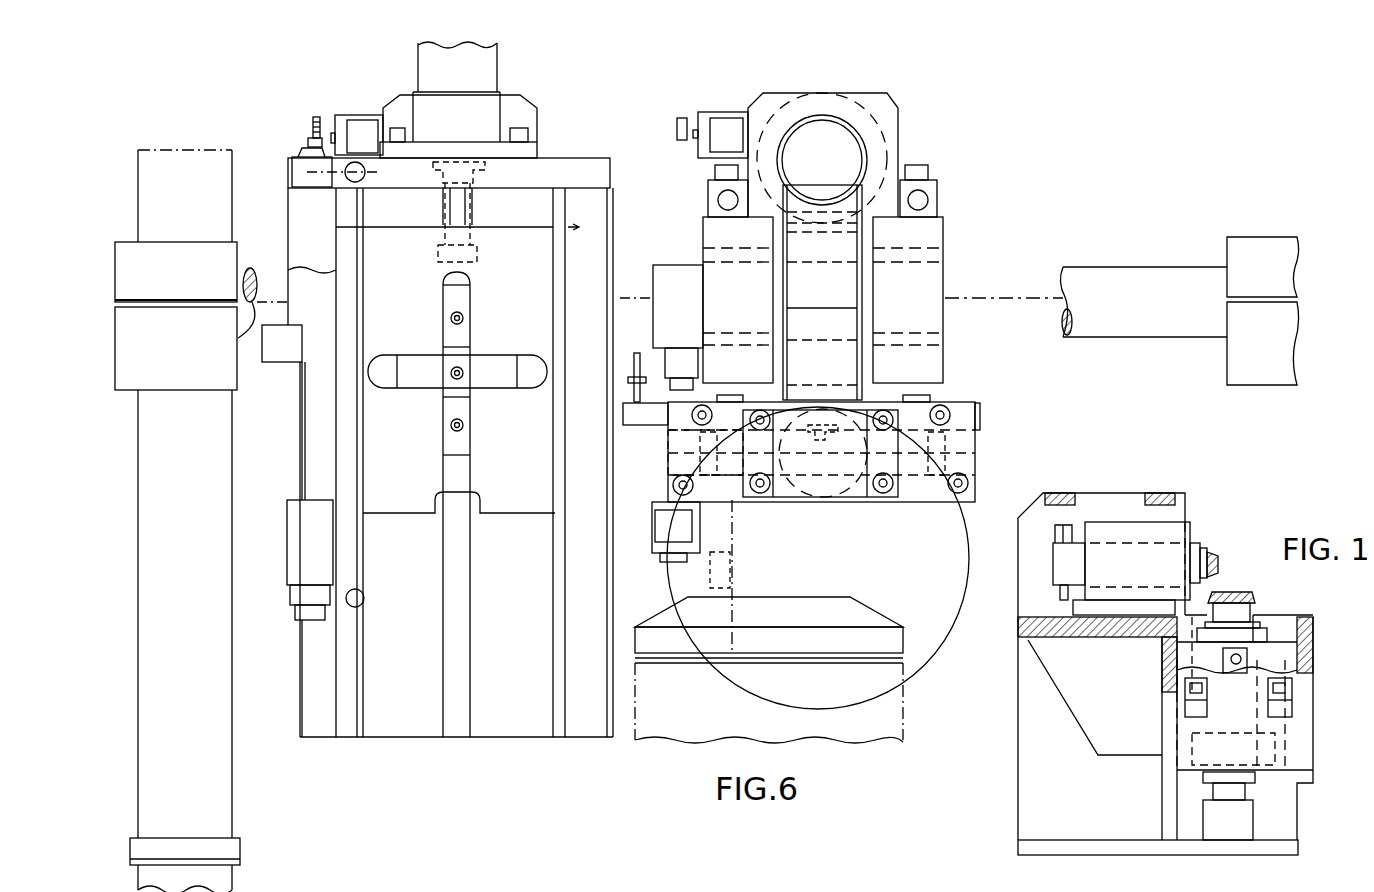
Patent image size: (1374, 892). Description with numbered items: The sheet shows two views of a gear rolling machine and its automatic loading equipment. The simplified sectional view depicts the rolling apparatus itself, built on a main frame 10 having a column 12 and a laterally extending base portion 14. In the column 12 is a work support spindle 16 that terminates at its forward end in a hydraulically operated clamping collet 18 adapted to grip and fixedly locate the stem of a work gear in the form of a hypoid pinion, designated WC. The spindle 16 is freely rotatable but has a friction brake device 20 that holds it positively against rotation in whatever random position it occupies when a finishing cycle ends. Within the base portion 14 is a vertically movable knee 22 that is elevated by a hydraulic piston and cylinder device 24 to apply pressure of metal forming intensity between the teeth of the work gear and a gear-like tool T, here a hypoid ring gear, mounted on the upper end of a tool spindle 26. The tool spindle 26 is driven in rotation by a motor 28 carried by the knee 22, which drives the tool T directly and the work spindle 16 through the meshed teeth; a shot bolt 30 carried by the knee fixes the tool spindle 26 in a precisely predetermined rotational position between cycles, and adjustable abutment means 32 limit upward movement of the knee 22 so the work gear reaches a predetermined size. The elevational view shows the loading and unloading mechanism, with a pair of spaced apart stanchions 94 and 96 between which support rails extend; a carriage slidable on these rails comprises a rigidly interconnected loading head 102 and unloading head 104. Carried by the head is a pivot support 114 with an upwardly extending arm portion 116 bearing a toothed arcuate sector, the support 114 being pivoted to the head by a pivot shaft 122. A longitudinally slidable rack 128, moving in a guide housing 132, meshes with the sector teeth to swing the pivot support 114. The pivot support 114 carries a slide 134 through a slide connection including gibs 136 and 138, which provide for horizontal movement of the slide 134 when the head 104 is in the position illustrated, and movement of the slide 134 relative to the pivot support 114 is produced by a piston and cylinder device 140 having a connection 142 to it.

In FIG. 6, the stanchion 94 is at (148, 543).
In FIG. 6, the stanchion 96 is at (1232, 370).
In FIG. 6, the loading head 102 is at (598, 210).
In FIG. 6, the unloading head 104 is at (945, 217).
In FIG. 6, the pivot support 114 is at (977, 403).
In FIG. 6, the arm portion 116 is at (845, 290).
In FIG. 6, the pivot shaft 122 is at (930, 257).
In FIG. 6, the rack 128 is at (842, 152).
In FIG. 6, the guide housing 132 is at (538, 112).
In FIG. 6, the slide 134 is at (545, 513).
In FIG. 6, the gib 136 is at (668, 455).
In FIG. 6, the gib 138 is at (977, 448).
In FIG. 6, the piston and cylinder device 140 is at (500, 62).
In FIG. 6, the connection 142 is at (480, 254).
In FIG. 1, the main frame 10 is at (1015, 763).
In FIG. 1, the column 12 is at (1058, 493).
In FIG. 1, the base portion 14 is at (1313, 775).
In FIG. 1, the work support spindle 16 is at (1182, 518).
In FIG. 1, the hydraulically operated clamping collet 18 is at (1200, 543).
In FIG. 1, the friction brake device 20 is at (1049, 544).
In FIG. 1, the knee 22 is at (1298, 615).
In FIG. 1, the hydraulic piston and cylinder device 24 is at (1253, 820).
In FIG. 1, the tool spindle 26 is at (1262, 607).
In FIG. 1, the motor 28 is at (1278, 750).
In FIG. 1, the shot bolt 30 is at (1247, 656).
In FIG. 1, the abutment means 32 is at (1292, 698).
In FIG. 1, the tool T is at (1247, 595).
In FIG. 1, the work gear WC is at (1222, 555).